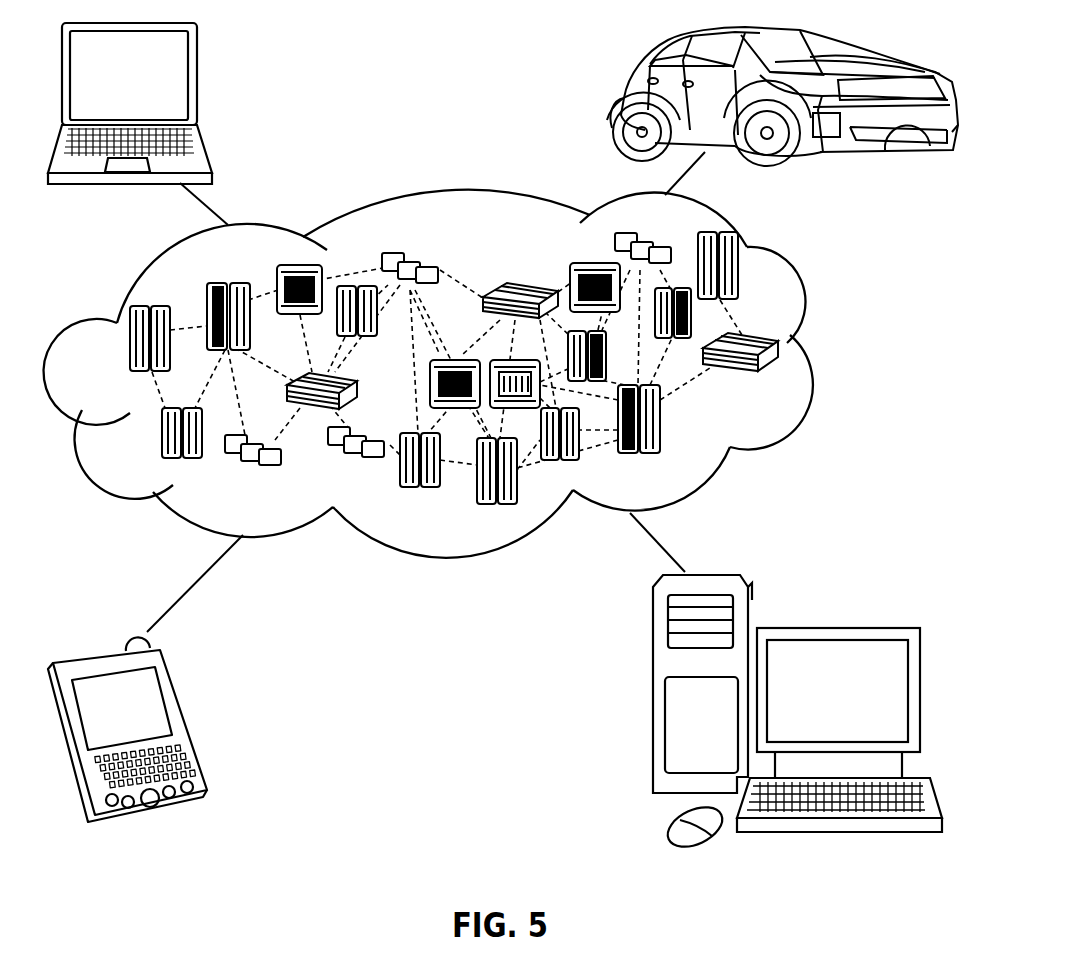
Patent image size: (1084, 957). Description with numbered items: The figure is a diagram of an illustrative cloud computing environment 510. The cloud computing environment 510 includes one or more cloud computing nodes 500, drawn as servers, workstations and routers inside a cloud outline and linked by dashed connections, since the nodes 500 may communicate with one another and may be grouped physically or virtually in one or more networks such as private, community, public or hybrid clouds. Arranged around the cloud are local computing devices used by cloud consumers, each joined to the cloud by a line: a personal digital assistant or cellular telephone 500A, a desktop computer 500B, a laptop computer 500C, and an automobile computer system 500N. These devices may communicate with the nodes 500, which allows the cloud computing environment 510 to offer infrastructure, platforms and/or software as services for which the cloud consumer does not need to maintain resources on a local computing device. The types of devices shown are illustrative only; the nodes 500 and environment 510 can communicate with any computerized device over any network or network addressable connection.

The cloud computing nodes 500 is at (778, 377).
The cloud computing environment 510 is at (837, 352).
The personal digital assistant (PDA) or cellular telephone 500A is at (190, 722).
The desktop computer 500B is at (835, 628).
The laptop computer 500C is at (197, 82).
The automobile computer system 500N is at (623, 98).